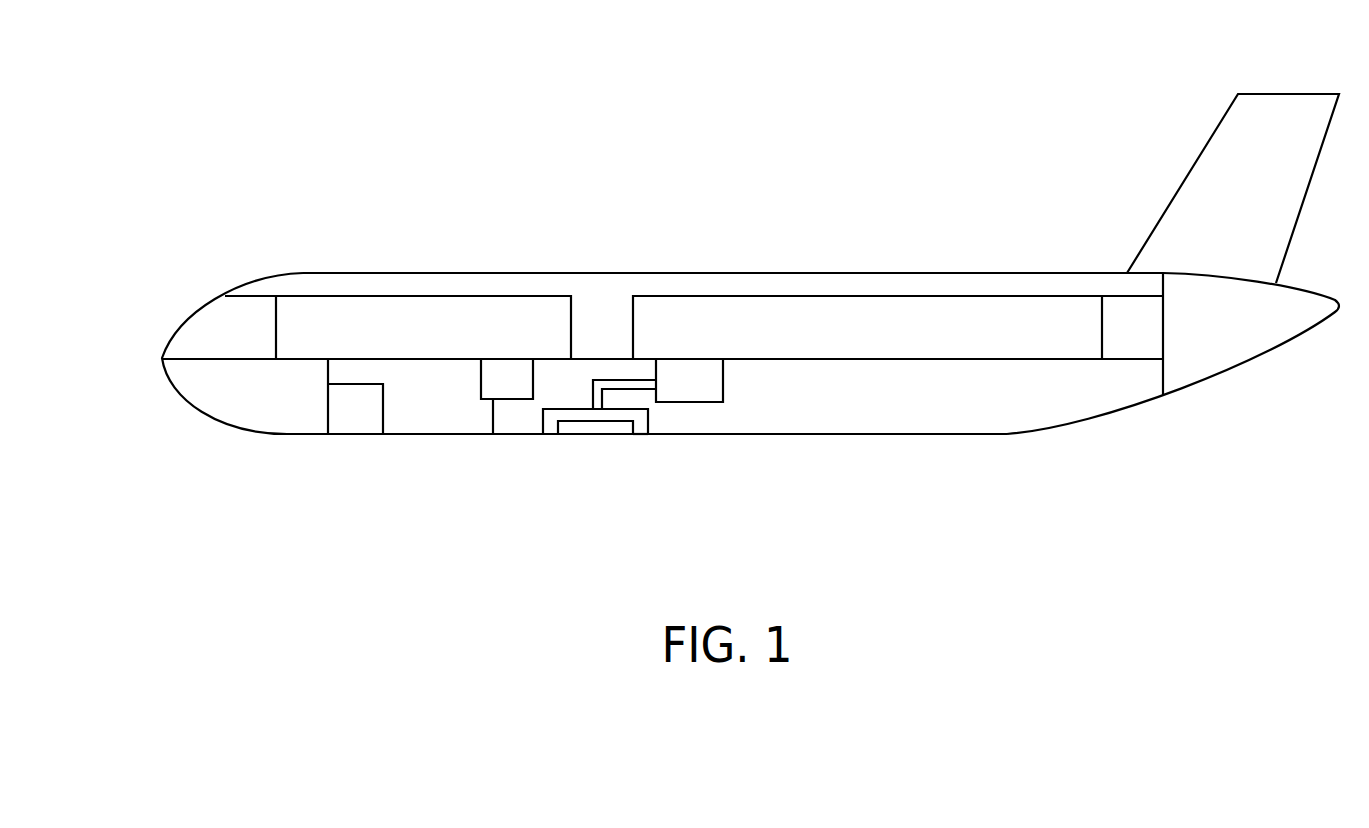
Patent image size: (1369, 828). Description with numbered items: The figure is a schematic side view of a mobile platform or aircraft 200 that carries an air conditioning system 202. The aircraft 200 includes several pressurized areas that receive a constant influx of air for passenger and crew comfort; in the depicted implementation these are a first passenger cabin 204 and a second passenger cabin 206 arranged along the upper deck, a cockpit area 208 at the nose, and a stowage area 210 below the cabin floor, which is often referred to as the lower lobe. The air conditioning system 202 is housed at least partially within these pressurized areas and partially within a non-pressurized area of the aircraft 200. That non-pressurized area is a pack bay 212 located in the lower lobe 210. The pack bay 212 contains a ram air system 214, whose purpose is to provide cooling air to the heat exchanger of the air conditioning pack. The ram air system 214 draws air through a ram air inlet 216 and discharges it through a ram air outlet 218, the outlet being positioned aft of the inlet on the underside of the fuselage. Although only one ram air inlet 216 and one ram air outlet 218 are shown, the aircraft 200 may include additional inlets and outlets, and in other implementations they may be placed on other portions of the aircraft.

The aircraft 200 is at (678, 212).
The air conditioning system 202 is at (728, 393).
The first passenger cabin 204 is at (440, 332).
The second passenger cabin 206 is at (738, 336).
The cockpit area 208 is at (222, 343).
The stowage area 210 is at (915, 400).
The pack bay 212 is at (526, 407).
The ram air system 214 is at (598, 428).
The ram air inlet 216 is at (552, 435).
The ram air outlet 218 is at (641, 435).